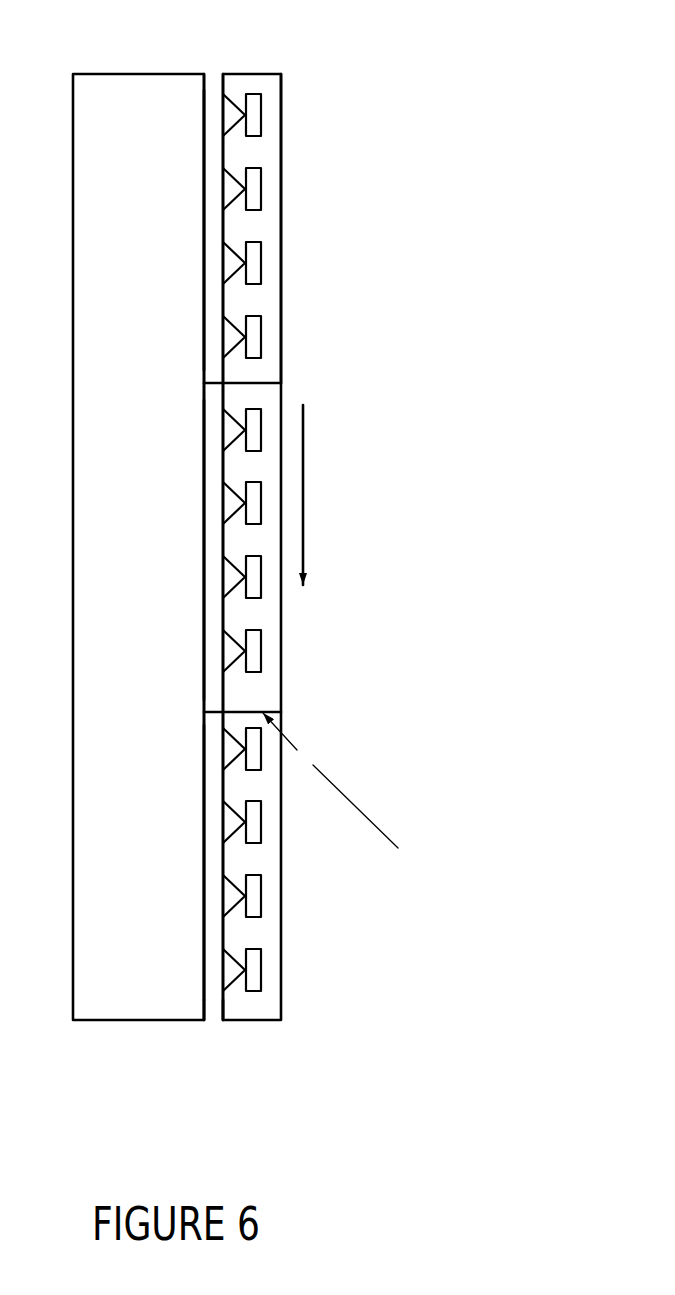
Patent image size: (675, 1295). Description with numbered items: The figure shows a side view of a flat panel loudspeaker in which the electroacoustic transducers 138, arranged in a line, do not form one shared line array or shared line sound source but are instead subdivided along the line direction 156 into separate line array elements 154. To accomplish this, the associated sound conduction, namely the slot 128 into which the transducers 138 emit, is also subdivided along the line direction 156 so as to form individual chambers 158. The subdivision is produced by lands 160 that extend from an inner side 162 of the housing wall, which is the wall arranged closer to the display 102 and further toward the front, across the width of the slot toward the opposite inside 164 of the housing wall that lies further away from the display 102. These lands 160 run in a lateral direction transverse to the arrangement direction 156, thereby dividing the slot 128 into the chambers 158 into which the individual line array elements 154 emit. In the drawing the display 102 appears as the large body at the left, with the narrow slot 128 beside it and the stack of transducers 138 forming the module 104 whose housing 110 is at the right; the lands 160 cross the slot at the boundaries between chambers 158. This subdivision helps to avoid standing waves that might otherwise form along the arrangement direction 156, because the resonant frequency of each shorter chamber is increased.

The display 102 is at (83, 74).
The light emitting module 104 is at (287, 53).
The module housing 110 is at (282, 87).
The slot 128 is at (215, 965).
The electroacoustic transducer 138 is at (262, 112).
The line array element 154 is at (279, 808).
The line direction 156 is at (303, 462).
The chamber 158 is at (212, 231).
The land 160 is at (205, 383).
The inner side of wall 162 is at (213, 97).
The opposite inside of wall 164 is at (217, 1010).